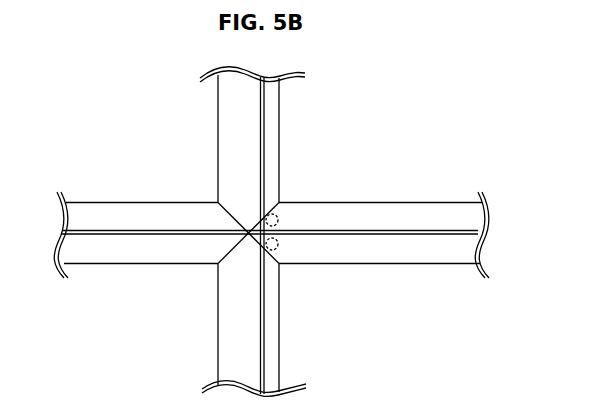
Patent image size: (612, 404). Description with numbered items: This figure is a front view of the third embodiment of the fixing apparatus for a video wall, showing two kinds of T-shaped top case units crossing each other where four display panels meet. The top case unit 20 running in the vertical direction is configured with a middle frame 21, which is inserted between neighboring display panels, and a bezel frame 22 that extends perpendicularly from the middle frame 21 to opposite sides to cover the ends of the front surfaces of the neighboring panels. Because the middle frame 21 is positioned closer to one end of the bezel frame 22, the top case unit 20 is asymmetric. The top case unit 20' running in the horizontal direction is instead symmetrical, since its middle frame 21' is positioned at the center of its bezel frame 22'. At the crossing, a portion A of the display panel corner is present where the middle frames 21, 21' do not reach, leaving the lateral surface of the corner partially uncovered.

The top case unit 20 is at (291, 232).
The top case unit 20' is at (271, 210).
The middle frame 21 is at (307, 235).
The middle frame 21' is at (270, 277).
The bezel frame 22 is at (192, 230).
The bezel frame 22' is at (274, 174).
The portion where the middle frame is not positioned A is at (276, 215).